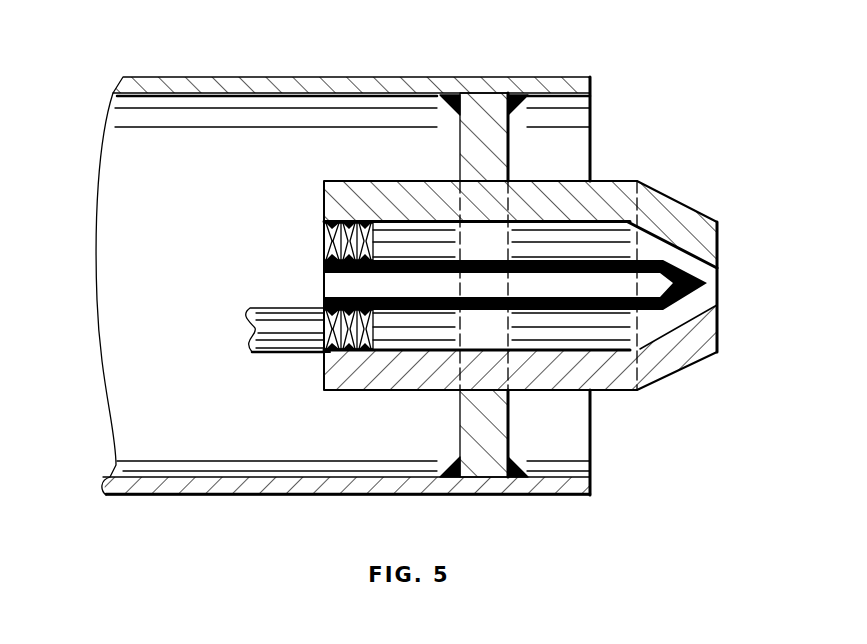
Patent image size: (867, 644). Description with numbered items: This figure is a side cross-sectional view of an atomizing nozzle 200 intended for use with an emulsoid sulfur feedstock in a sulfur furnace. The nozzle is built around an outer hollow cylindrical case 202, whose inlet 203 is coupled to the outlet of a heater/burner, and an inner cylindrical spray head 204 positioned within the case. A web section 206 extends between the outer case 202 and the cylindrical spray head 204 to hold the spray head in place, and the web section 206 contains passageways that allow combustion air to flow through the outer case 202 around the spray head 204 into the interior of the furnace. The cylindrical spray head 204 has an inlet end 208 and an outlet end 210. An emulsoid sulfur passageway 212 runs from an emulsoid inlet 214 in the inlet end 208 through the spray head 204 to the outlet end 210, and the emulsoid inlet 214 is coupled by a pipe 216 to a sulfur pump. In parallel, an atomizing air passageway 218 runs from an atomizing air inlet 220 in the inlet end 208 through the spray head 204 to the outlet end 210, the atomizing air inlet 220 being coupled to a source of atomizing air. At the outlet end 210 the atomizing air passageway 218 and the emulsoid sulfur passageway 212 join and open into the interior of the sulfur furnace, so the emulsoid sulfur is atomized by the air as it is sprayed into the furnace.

The atomizing nozzle 200 is at (652, 93).
The outer hollow cylindrical case 202 is at (183, 78).
The inlet 203 is at (116, 86).
The cylindrical spray head 204 is at (600, 180).
The web section 206 is at (512, 128).
The inlet end 208 is at (324, 213).
The outlet end 210 is at (718, 321).
The emulsoid sulfur passageway 212 is at (435, 347).
The emulsoid inlet 214 is at (308, 360).
The pipe 216 is at (278, 351).
The atomizing air passageway 218 is at (405, 231).
The atomizing air inlet 220 is at (324, 253).